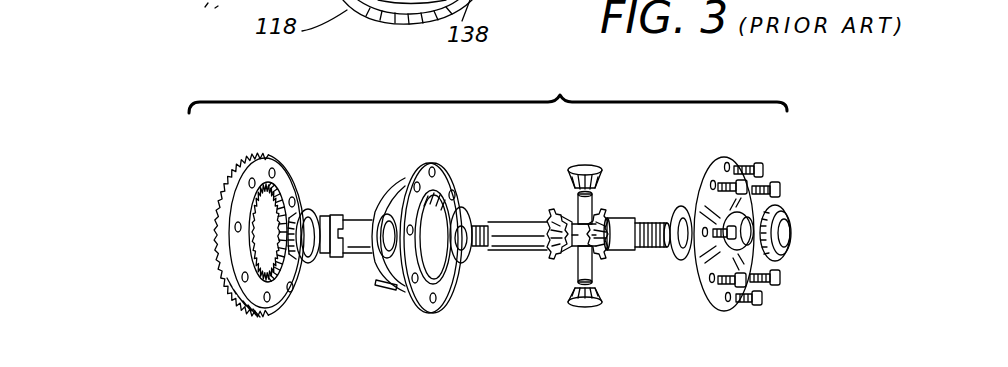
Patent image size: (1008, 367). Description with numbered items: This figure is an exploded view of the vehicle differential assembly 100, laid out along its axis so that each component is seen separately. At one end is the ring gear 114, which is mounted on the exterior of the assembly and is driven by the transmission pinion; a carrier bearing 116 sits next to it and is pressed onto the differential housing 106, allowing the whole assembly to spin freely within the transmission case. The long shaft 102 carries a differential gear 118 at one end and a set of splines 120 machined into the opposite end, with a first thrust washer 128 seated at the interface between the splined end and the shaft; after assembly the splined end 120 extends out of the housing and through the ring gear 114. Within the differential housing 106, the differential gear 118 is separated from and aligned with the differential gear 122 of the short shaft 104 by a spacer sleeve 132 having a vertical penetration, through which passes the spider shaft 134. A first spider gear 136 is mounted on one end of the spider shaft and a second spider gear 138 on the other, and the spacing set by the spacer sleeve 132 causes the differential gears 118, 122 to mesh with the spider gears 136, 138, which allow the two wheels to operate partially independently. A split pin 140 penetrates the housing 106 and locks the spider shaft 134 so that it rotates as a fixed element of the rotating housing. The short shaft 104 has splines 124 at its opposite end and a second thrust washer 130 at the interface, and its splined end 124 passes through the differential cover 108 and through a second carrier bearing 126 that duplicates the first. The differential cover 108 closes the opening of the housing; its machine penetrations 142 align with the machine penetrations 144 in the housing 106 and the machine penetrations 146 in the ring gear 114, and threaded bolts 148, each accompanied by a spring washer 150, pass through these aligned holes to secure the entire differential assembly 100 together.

The differential assembly 100 is at (210, 256).
The long shaft 102 is at (523, 242).
The short shaft 104 is at (622, 216).
The differential housing 106 is at (372, 262).
The differential cover 108 is at (720, 313).
The ring gear 114 is at (257, 156).
The carrier bearing 116 is at (306, 208).
The differential gear 118 is at (560, 210).
The splines 120 is at (483, 226).
The differential gear 122 is at (599, 262).
The splines 124 is at (655, 252).
The second carrier bearing 126 is at (787, 262).
The first thrust washer 128 is at (465, 212).
The second thrust washer 130 is at (682, 206).
The spacer sleeve 132 is at (575, 277).
The spider shaft 134 is at (577, 280).
The first spider gear 136 is at (585, 165).
The second spider gear 138 is at (587, 307).
The split pin 140 is at (385, 294).
The machine penetrations 142 is at (737, 160).
The machine penetrations 144 is at (432, 165).
The machine penetrations 146 is at (275, 174).
The threaded bolts 148 is at (776, 191).
The spring washer 150 is at (764, 184).